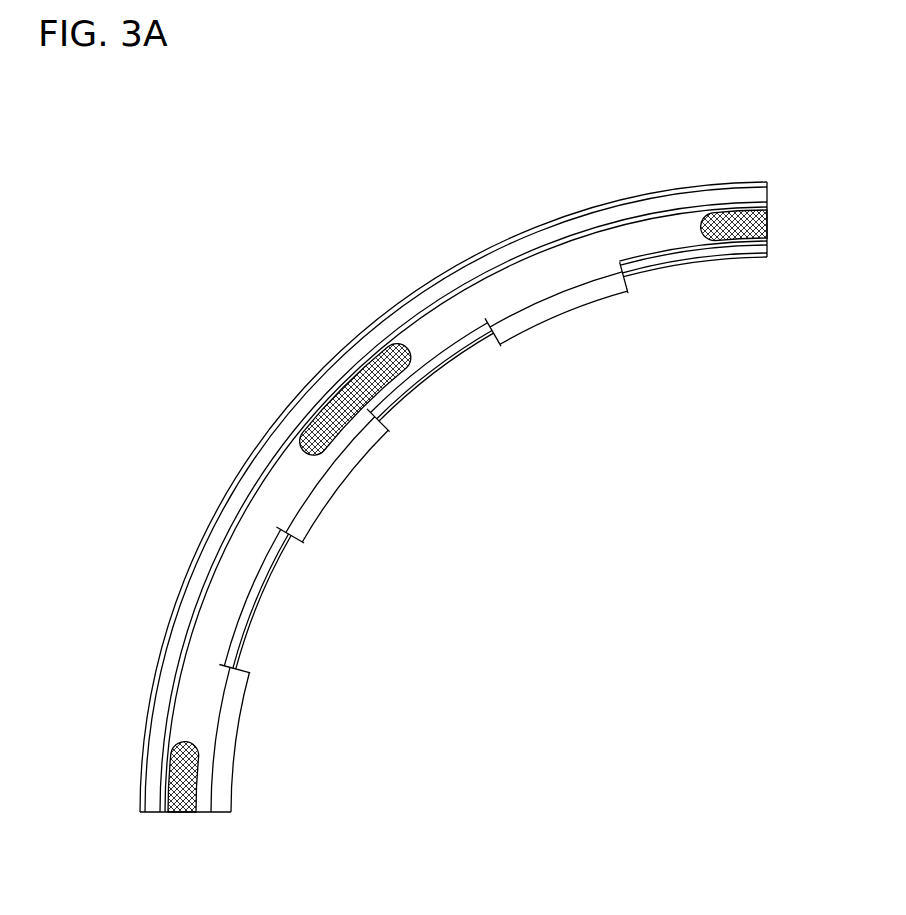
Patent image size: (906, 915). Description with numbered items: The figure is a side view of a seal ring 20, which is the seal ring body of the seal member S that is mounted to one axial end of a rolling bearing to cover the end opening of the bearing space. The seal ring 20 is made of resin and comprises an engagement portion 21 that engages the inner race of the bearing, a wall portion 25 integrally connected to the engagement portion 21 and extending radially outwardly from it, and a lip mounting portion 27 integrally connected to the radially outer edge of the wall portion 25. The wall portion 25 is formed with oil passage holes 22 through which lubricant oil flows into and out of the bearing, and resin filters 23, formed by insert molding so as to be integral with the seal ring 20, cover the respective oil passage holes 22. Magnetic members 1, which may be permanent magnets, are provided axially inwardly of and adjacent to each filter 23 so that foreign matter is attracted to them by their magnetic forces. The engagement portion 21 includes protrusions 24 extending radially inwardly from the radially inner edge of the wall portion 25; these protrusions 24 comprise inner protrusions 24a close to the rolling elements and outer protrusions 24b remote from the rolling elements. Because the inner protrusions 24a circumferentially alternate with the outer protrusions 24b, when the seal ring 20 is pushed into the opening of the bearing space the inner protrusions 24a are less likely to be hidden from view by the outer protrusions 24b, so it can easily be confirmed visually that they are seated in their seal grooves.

The magnetic member 1 is at (316, 386).
The seal member S is at (639, 172).
The seal ring 20 is at (430, 320).
The engagement portion 21 is at (222, 820).
The oil passage hole 22 is at (729, 207).
The filter 23 is at (364, 409).
The protrusion 24 is at (652, 380).
The inner protrusion 24a is at (428, 363).
The outer protrusion 24b is at (560, 312).
The wall portion 25 is at (278, 497).
The lip mounting portion 27 is at (521, 240).